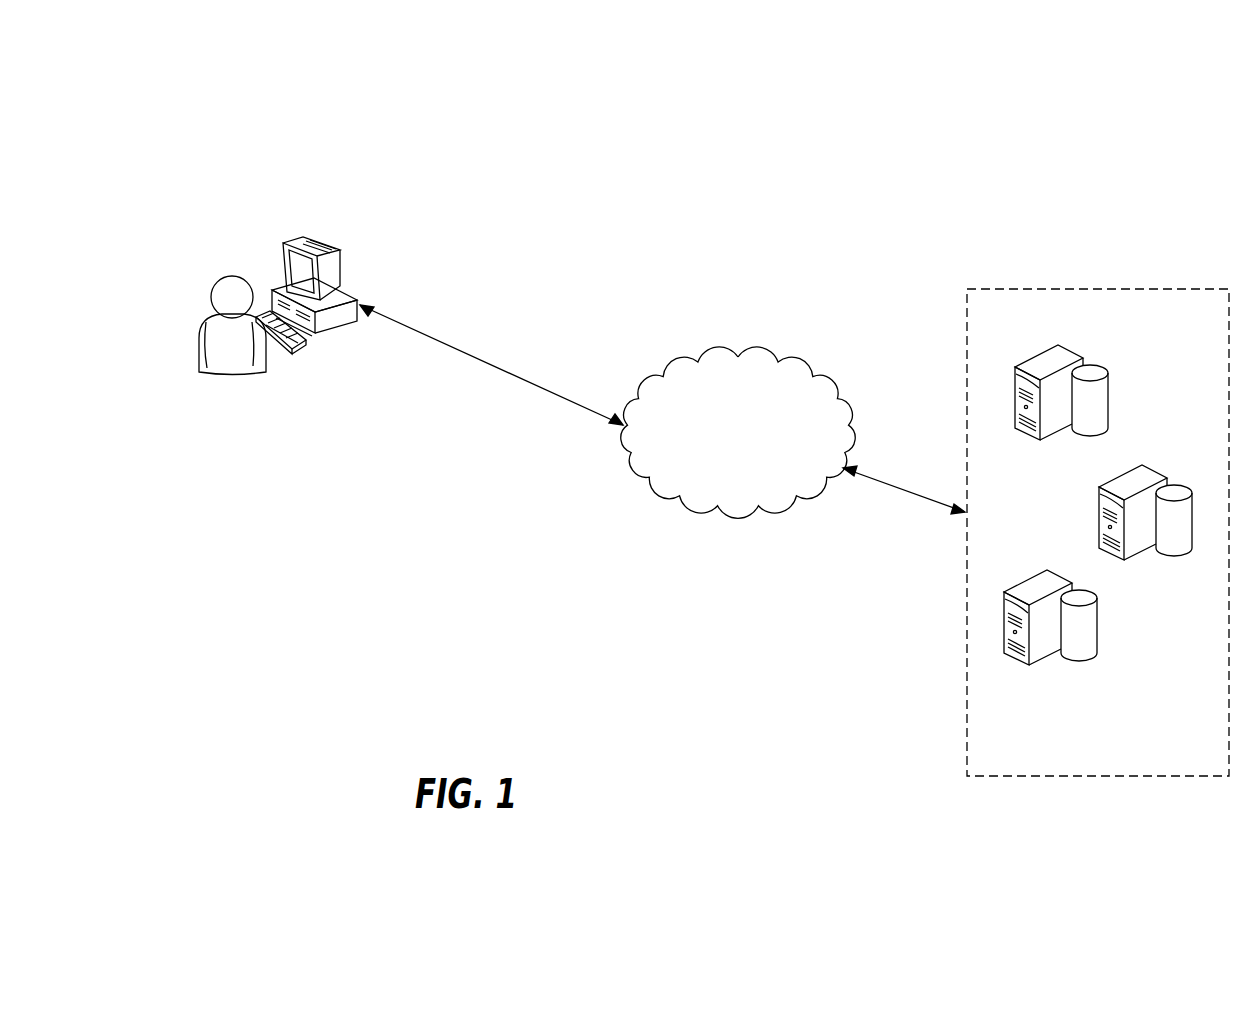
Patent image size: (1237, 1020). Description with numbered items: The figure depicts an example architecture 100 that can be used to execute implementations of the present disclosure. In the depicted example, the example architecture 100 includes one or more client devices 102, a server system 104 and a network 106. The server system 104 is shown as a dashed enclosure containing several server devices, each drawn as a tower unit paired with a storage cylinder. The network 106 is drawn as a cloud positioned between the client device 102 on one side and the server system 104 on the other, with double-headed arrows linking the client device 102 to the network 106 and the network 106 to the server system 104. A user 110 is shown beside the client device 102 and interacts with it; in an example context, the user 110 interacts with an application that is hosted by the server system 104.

The example architecture 100 is at (588, 121).
The client device 102 is at (278, 248).
The server system 104 is at (1097, 289).
The network 106 is at (744, 358).
The user 110 is at (236, 374).